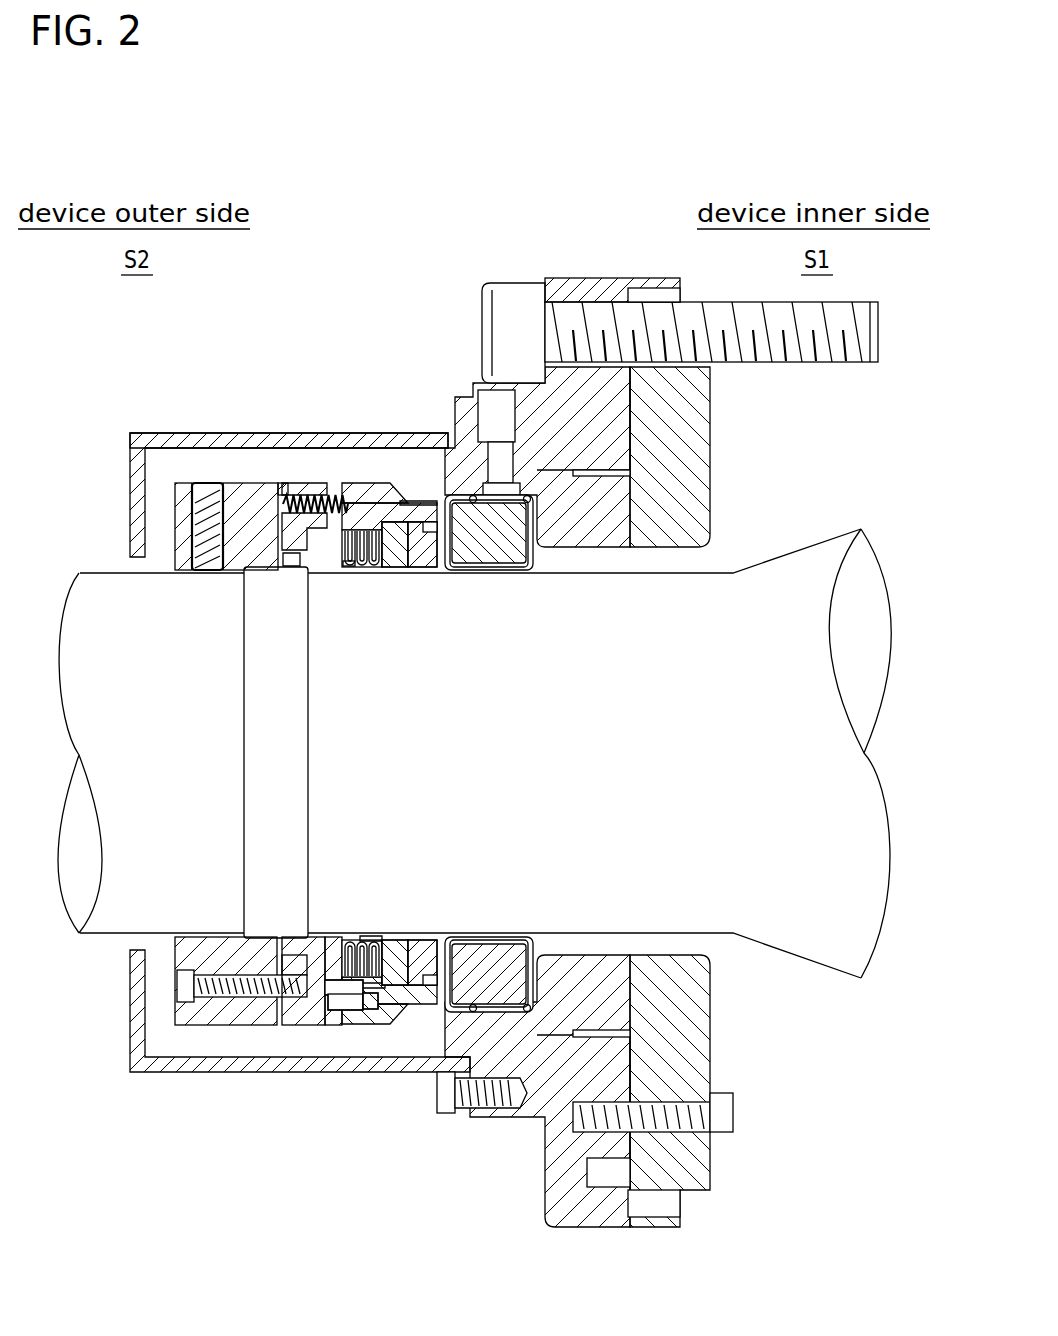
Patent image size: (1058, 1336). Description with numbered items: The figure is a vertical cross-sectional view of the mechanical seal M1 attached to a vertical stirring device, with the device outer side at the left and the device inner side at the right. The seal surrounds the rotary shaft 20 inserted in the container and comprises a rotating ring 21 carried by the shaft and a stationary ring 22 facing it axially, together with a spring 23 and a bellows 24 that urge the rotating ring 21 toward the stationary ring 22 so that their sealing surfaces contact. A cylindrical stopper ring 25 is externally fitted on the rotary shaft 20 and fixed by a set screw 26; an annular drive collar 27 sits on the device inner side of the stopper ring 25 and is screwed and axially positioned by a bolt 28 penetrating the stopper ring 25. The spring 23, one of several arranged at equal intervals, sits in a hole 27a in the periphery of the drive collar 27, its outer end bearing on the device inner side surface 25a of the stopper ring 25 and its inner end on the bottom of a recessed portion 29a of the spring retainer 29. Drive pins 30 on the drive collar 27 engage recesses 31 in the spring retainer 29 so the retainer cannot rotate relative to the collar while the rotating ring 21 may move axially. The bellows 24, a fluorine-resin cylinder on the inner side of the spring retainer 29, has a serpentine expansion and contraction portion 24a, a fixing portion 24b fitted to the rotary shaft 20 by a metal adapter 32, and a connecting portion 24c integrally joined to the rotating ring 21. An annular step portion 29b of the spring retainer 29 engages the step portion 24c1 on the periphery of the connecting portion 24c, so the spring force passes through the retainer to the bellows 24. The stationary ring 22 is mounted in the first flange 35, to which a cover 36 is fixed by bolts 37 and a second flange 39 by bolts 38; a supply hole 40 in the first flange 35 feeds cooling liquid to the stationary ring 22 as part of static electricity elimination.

The rotary shaft 20 is at (705, 915).
The rotating ring 21 is at (427, 565).
The stationary ring 22 is at (466, 535).
The spring 23 is at (345, 484).
The bellows 24 is at (368, 568).
The expansion and contraction portion 24a is at (348, 566).
The fixing portion 24b is at (292, 565).
The connecting portion 24c is at (395, 565).
The step portion 24c1 is at (372, 936).
The stopper ring 25 is at (240, 483).
The device inner side surface 25a is at (284, 485).
The set screw 26 is at (203, 483).
The drive collar 27 is at (307, 483).
The hole 27a is at (313, 494).
The bolt 28 is at (220, 1002).
The spring retainer 29 is at (370, 503).
The recessed portion 29a is at (405, 500).
The step portion 29b is at (365, 983).
The drive pin 30 is at (333, 1012).
The recess 31 is at (372, 1002).
The adapter 32 is at (292, 570).
The first flange 35 is at (478, 463).
The cover 36 is at (142, 1073).
The bolt 37 is at (482, 1110).
The bolt 38 is at (690, 1125).
The second flange 39 is at (693, 1192).
The supply hole 40 is at (497, 430).
The mechanical seal M1 is at (358, 432).